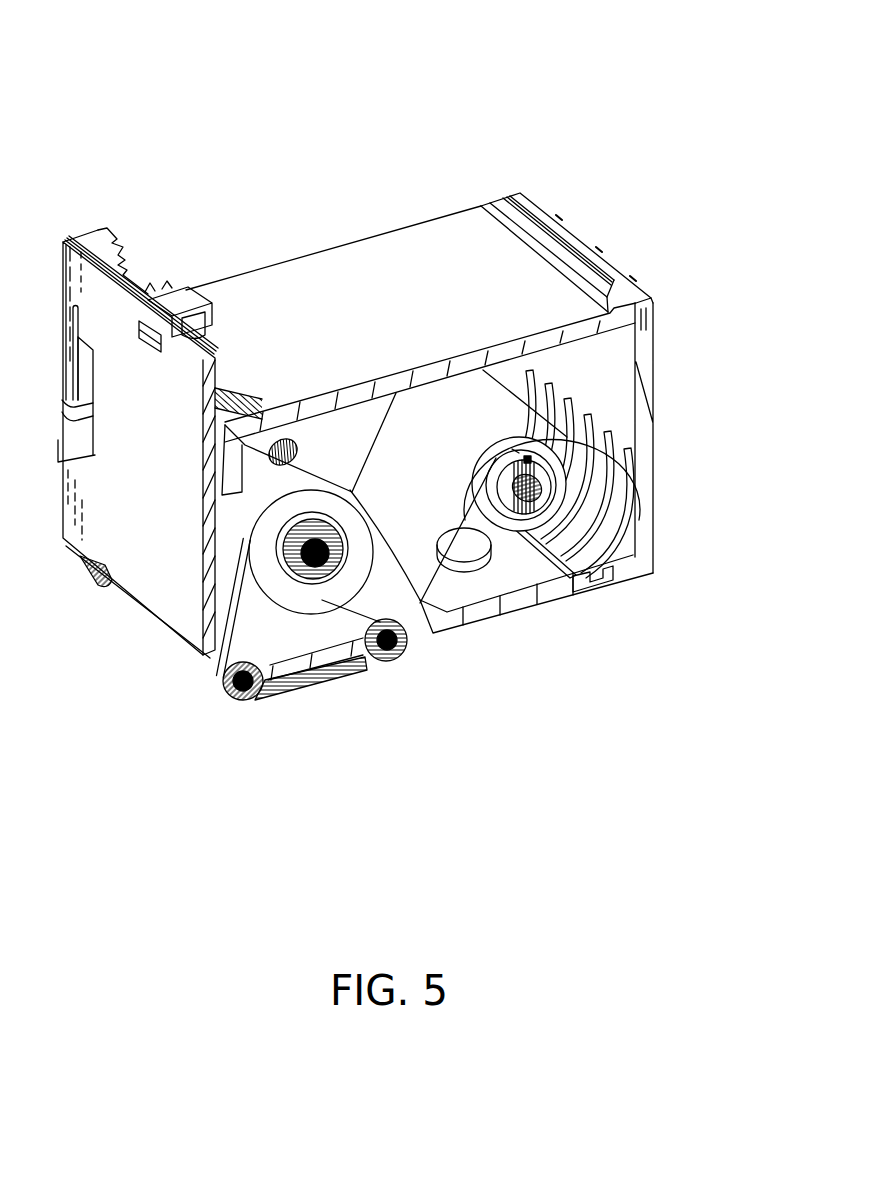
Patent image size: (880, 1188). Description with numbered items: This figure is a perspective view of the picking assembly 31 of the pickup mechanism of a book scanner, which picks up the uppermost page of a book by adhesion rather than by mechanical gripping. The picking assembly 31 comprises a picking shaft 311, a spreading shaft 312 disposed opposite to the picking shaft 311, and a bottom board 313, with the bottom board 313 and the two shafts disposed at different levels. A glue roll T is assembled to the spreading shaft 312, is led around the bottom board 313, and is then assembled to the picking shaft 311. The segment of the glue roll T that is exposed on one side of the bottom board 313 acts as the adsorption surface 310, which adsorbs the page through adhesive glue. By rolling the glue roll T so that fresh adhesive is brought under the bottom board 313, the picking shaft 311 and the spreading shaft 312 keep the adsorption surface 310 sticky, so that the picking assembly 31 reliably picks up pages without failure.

The picking assembly 31 is at (68, 52).
The glue roll T is at (228, 611).
The adsorption surface 310 is at (338, 668).
The picking shaft 311 is at (639, 520).
The spreading shaft 312 is at (433, 623).
The bottom board 313 is at (320, 672).